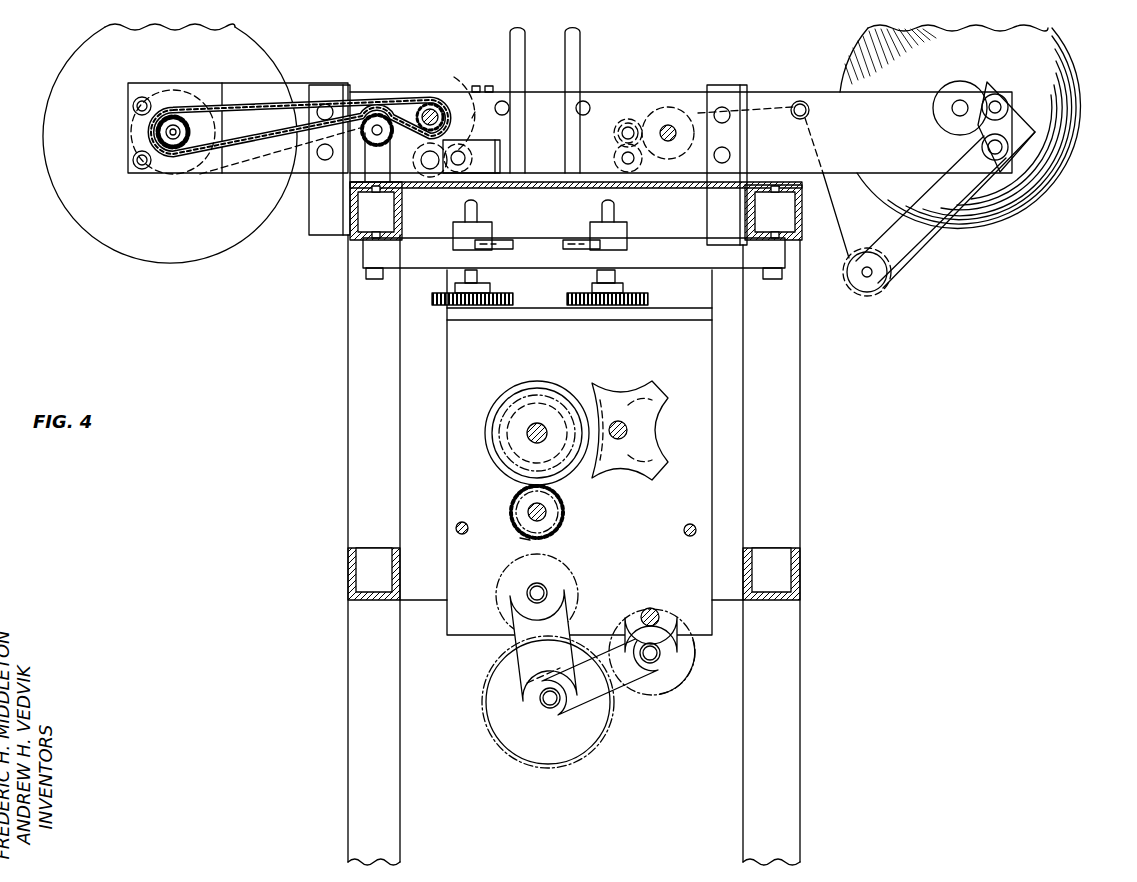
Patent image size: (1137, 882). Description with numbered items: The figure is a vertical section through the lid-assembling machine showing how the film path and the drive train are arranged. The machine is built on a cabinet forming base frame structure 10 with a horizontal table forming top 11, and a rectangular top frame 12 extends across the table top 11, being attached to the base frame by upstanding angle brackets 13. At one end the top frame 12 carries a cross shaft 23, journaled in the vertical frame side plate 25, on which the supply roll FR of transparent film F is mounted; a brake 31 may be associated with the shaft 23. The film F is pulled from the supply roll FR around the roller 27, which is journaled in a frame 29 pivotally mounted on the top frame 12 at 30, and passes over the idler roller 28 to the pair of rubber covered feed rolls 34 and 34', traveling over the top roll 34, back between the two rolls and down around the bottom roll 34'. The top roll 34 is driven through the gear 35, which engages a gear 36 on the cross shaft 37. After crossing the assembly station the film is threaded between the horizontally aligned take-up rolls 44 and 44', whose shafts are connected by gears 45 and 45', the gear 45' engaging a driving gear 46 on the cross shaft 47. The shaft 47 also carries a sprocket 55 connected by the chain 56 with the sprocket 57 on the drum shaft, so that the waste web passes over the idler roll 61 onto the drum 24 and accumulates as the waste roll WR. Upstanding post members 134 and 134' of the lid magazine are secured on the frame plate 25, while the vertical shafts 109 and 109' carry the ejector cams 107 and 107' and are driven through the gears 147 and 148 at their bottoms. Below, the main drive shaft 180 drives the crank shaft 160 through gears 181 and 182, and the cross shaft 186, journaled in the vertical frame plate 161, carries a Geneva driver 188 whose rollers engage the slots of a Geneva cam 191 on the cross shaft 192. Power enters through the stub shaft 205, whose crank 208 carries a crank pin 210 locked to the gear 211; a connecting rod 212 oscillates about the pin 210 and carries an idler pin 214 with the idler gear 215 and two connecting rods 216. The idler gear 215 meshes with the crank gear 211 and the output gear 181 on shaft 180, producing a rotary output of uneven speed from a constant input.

The waste roll WR is at (52, 82).
The supply roll FR is at (1068, 84).
The transparent film F is at (954, 246).
The base frame structure 10 is at (337, 408).
The table forming top 11 is at (682, 186).
The rectangular top frame 12 is at (795, 79).
The angle brackets 13 is at (336, 96).
The cross shaft 23 is at (956, 111).
The drum 24 is at (174, 140).
The frame side plate 25 is at (827, 104).
The roller 27 is at (868, 294).
The idler roller 28 is at (797, 120).
The pivoted frame 29 is at (898, 225).
The pivot 30 is at (982, 147).
The brake 31 is at (1002, 92).
The top feed roll 34 is at (636, 106).
The bottom feed roll 34' is at (612, 157).
The gear 35 is at (622, 125).
The gear 36 is at (672, 106).
The cross shaft 37 is at (674, 128).
The take-up roll 44 is at (472, 145).
The take-up roll 44' is at (426, 177).
The gear 45 is at (477, 106).
The gear 45' is at (451, 196).
The driving gear 46 is at (462, 88).
The cross shaft 47 is at (430, 108).
The sprocket 55 is at (416, 106).
The chain 56 is at (290, 105).
The sprocket 57 is at (173, 118).
The idler roll 61 is at (388, 148).
The ejector cam 107 is at (509, 230).
The ejector cam 107' is at (582, 222).
The vertical shaft 109 is at (490, 219).
The vertical shaft 109' is at (628, 222).
The post member 134 is at (491, 96).
The post member 134' is at (596, 100).
The gear 147 is at (496, 298).
The gear 148 is at (632, 299).
The crank shaft 160 is at (548, 513).
The vertical frame plate 161 is at (452, 403).
The main drive shaft 180 is at (526, 594).
The output gear 181 is at (500, 570).
The gear 182 is at (508, 534).
The cross shaft 186 is at (536, 424).
The Geneva driver 188 is at (482, 450).
The Geneva cam 191 is at (613, 396).
The cross shaft 192 is at (618, 441).
The stub shaft 205 is at (648, 608).
The crank 208 is at (674, 612).
The crank pin 210 is at (662, 653).
The crank gear 211 is at (680, 676).
The connecting rod 212 is at (626, 690).
The idler pin 214 is at (550, 709).
The idler gear 215 is at (492, 735).
The connecting rods 216 is at (522, 642).